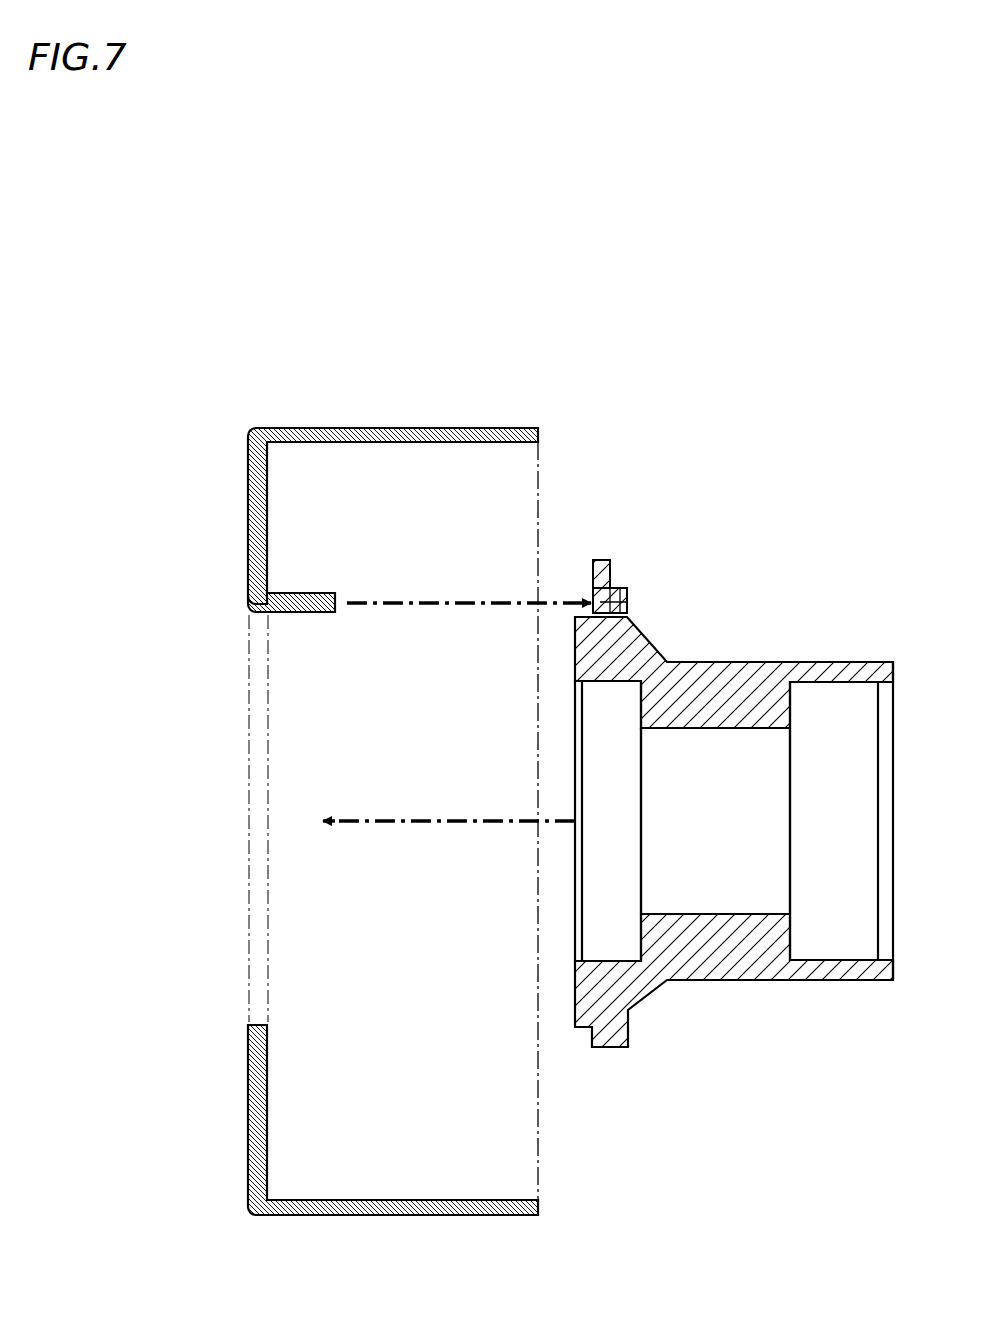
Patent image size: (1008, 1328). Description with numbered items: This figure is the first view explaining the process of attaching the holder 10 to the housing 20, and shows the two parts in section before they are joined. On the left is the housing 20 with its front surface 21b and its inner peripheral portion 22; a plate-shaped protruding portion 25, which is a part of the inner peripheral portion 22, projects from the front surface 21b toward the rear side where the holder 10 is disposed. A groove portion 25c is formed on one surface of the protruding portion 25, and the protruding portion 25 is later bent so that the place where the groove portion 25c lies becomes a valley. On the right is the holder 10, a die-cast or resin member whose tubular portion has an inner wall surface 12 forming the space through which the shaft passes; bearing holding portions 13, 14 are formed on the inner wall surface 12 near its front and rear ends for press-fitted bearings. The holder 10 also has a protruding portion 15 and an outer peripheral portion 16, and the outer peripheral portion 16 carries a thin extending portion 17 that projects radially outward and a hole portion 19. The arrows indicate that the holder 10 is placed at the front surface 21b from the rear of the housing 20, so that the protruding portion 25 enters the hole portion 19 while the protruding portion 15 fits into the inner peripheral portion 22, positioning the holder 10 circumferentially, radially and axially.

The holder 10 is at (855, 655).
The inner wall surface 12 is at (737, 912).
The bearing holding portion 13 is at (607, 958).
The bearing holding portion 14 is at (840, 958).
The protruding portion 15 is at (582, 1027).
The outer peripheral portion 16 is at (600, 1046).
The extending portion 17 is at (603, 560).
The hole portion 19 is at (630, 598).
The housing 20 is at (398, 418).
The front surface 21b is at (256, 522).
The inner peripheral portion 22 is at (263, 1022).
The protruding portion 25 is at (315, 594).
The groove portion 25c is at (283, 597).